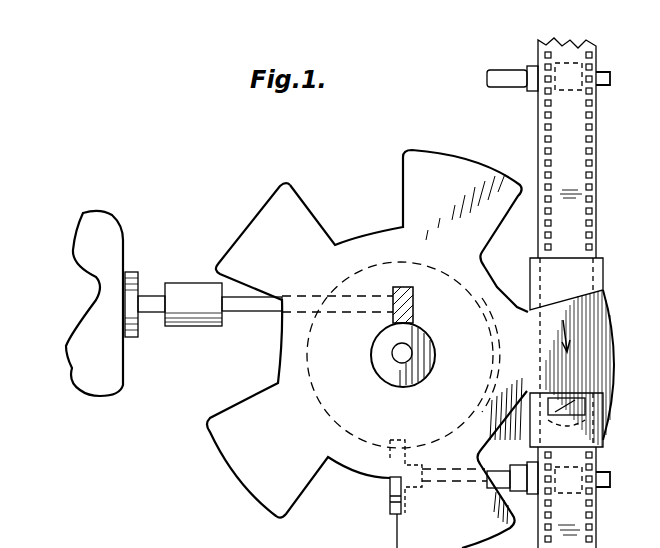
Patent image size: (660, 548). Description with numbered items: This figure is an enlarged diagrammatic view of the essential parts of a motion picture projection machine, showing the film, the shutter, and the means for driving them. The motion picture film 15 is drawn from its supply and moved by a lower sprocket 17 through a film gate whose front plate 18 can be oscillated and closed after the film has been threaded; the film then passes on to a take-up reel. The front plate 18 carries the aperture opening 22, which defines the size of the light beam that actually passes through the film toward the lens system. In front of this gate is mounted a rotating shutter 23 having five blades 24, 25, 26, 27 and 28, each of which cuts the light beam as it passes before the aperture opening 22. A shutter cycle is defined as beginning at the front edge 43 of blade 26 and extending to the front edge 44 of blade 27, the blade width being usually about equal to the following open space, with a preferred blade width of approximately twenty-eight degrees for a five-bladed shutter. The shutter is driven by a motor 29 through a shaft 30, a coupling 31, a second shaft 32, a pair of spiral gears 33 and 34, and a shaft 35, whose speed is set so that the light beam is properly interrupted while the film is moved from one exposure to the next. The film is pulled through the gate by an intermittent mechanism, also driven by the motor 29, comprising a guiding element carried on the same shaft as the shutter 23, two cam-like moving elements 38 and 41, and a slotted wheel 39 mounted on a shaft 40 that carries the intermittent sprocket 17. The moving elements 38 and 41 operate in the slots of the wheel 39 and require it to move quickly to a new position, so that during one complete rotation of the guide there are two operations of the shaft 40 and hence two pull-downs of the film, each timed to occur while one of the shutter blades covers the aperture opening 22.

The motion picture film 15 is at (570, 183).
The lower sprocket 17 is at (506, 498).
The front plate 18 is at (575, 275).
The aperture opening 22 is at (600, 396).
The rotating shutter 23 is at (300, 357).
The shutter blade 24 is at (420, 527).
The shutter blade 25 is at (605, 350).
The shutter blade 26 is at (462, 163).
The shutter blade 27 is at (248, 223).
The shutter blade 28 is at (250, 473).
The motor 29 is at (112, 248).
The shaft 30 is at (162, 312).
The coupling 31 is at (215, 326).
The shaft 32 is at (242, 313).
The spiral gear 33 is at (413, 299).
The spiral gear 34 is at (422, 341).
The shaft 35 is at (412, 356).
The moving element 38 is at (453, 443).
The wheel 39 is at (390, 507).
The shaft 40 is at (497, 471).
The moving element 41 is at (485, 383).
The front edge 43 is at (512, 212).
The front edge 44 is at (320, 219).